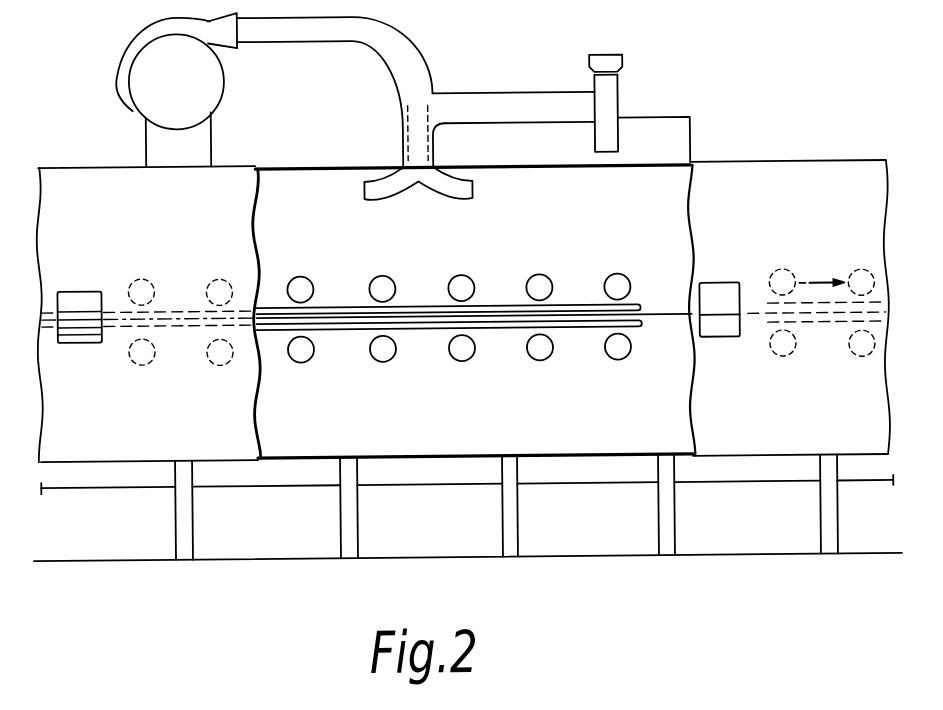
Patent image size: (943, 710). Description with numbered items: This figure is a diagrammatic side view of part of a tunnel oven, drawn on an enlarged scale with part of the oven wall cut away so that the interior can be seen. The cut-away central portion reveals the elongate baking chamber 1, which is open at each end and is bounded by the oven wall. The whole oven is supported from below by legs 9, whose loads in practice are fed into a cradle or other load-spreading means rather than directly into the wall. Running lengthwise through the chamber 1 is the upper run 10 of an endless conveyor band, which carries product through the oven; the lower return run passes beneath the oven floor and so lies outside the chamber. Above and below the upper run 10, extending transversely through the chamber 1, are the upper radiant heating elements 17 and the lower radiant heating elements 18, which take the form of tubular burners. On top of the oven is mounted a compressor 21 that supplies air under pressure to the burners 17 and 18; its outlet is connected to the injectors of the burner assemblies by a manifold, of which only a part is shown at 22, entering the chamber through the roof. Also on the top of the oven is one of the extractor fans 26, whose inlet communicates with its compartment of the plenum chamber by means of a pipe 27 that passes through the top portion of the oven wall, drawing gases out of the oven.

The baking chamber 1 is at (545, 233).
The legs 9 is at (181, 541).
The upper run of the endless conveyor band 10 is at (663, 313).
The upper radiant heating elements 17 is at (301, 274).
The lower radiant heating elements 18 is at (306, 350).
The compressor 21 is at (193, 92).
The manifold 22 is at (447, 184).
The extractor fan 26 is at (617, 96).
The pipe 27 is at (534, 95).